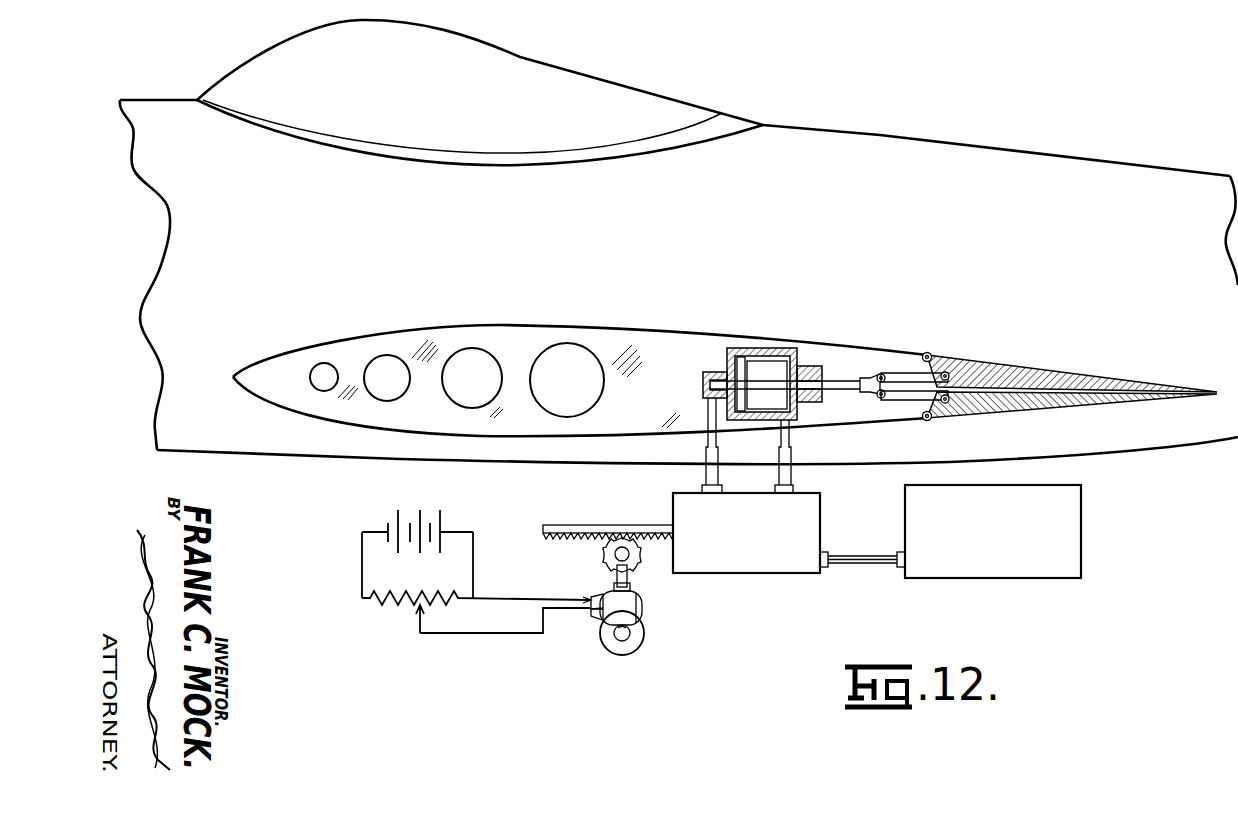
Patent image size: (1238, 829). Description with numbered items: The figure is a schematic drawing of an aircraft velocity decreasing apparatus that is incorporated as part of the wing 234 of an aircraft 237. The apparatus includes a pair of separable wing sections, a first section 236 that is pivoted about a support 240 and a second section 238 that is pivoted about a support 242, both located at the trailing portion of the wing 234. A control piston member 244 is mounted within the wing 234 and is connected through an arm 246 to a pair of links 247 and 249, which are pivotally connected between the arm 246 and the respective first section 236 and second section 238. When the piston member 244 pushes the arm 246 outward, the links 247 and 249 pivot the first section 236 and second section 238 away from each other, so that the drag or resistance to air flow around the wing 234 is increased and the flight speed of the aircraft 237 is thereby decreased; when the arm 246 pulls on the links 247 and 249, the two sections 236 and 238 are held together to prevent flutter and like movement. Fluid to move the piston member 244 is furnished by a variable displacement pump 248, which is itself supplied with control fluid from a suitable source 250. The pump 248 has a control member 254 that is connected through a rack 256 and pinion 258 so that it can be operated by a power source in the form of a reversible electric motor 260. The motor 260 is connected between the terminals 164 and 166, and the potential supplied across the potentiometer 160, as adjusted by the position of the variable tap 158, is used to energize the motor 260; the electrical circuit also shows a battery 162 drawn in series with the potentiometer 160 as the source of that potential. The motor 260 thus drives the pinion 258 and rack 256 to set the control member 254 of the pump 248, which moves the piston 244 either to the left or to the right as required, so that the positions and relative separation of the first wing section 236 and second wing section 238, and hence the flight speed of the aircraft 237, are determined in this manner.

The variable tap 158 is at (416, 630).
The potentiometer 160 is at (398, 605).
The battery 162 is at (392, 512).
The terminal 164 is at (590, 598).
The terminal 166 is at (590, 614).
The wing 234 is at (571, 330).
The first wing section 236 is at (1040, 372).
The aircraft 237 is at (880, 146).
The second wing section 238 is at (1050, 403).
The support 240 is at (926, 352).
The support 242 is at (927, 422).
The control piston member 244 is at (768, 345).
The arm 246 is at (872, 378).
The link 247 is at (903, 372).
The variable displacement pump 248 is at (808, 572).
The link 249 is at (905, 396).
The fluid source 250 is at (1070, 572).
The control member 254 is at (665, 533).
The rack 256 is at (590, 533).
The pinion 258 is at (640, 566).
The reversible electric motor 260 is at (645, 646).